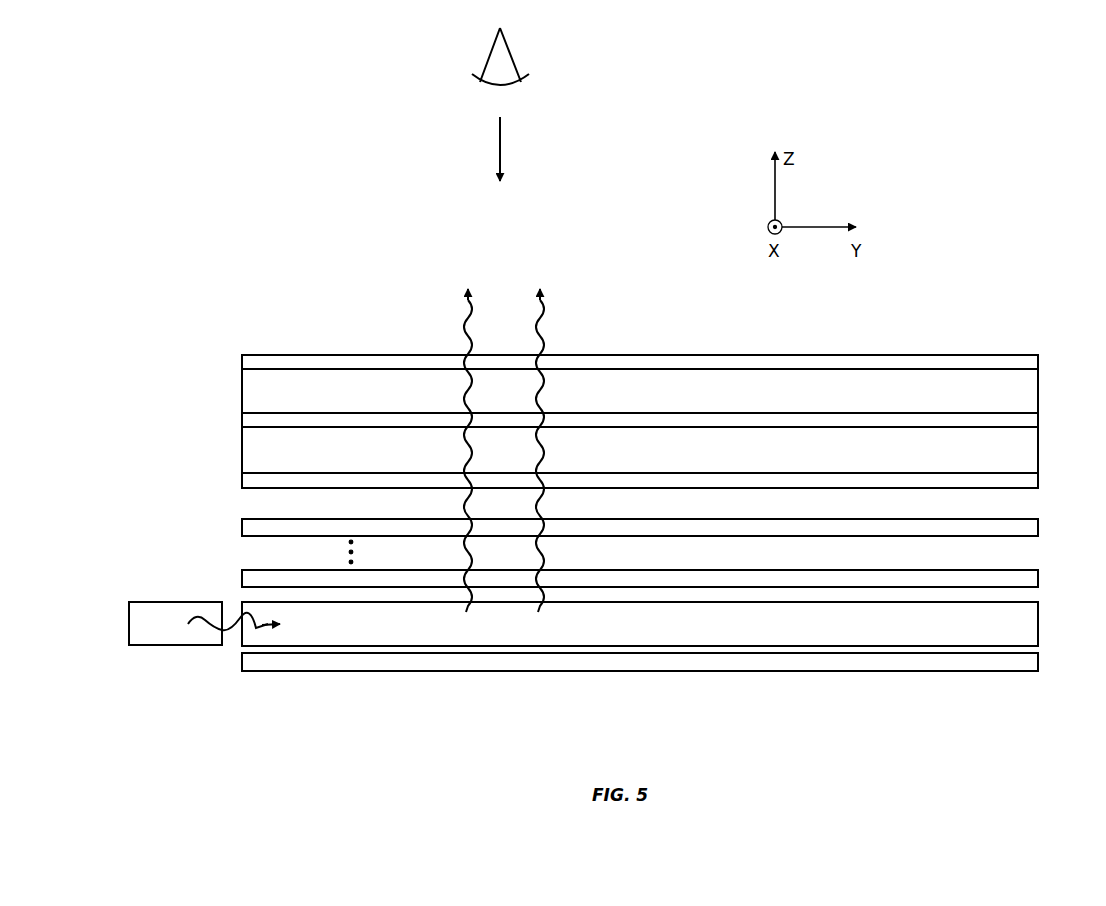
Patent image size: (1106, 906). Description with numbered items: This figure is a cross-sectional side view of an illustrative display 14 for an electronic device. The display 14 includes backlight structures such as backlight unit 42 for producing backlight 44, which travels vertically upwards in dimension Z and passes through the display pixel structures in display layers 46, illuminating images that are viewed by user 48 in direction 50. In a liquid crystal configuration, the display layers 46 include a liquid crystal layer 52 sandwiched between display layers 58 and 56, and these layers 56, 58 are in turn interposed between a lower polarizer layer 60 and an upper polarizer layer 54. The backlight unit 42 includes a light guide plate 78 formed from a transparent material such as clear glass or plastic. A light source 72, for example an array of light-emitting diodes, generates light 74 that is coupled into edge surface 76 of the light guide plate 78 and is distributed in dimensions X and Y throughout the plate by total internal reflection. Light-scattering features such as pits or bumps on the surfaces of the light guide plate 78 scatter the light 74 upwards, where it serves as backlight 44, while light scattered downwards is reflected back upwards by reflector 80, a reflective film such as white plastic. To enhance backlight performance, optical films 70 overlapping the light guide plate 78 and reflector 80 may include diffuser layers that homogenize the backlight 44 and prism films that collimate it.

The display 14 is at (624, 490).
The backlight unit 42 is at (647, 617).
The backlight 44 is at (541, 330).
The display layers 46 is at (624, 411).
The user 48 is at (512, 58).
The direction 50 is at (501, 141).
The liquid crystal layer 52 is at (315, 420).
The upper polarizer layer 54 is at (265, 362).
The display layer 56 is at (243, 389).
The display layer 58 is at (243, 442).
The lower polarizer layer 60 is at (598, 497).
The optical films 70 is at (235, 513).
The light source 72 is at (137, 625).
The light 74 is at (206, 622).
The edge surface 76 is at (241, 637).
The light guide plate 78 is at (362, 635).
The reflector 80 is at (308, 665).